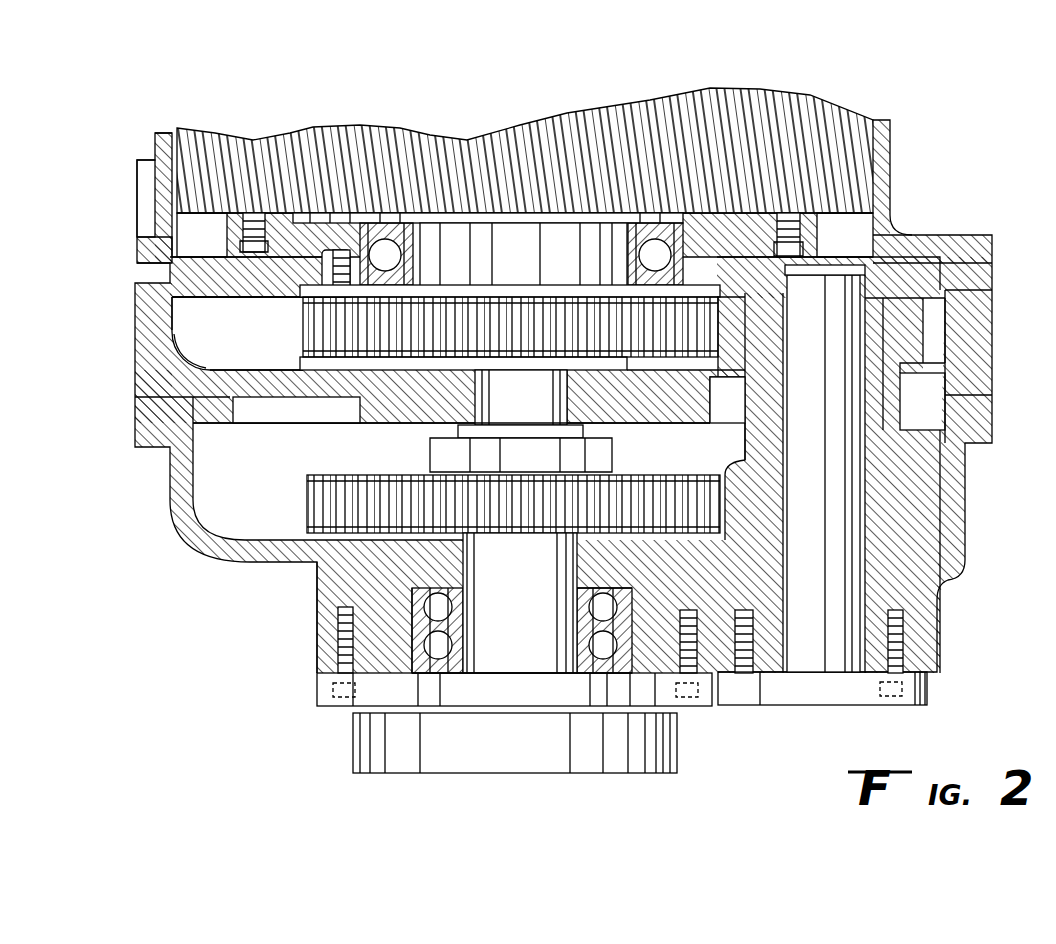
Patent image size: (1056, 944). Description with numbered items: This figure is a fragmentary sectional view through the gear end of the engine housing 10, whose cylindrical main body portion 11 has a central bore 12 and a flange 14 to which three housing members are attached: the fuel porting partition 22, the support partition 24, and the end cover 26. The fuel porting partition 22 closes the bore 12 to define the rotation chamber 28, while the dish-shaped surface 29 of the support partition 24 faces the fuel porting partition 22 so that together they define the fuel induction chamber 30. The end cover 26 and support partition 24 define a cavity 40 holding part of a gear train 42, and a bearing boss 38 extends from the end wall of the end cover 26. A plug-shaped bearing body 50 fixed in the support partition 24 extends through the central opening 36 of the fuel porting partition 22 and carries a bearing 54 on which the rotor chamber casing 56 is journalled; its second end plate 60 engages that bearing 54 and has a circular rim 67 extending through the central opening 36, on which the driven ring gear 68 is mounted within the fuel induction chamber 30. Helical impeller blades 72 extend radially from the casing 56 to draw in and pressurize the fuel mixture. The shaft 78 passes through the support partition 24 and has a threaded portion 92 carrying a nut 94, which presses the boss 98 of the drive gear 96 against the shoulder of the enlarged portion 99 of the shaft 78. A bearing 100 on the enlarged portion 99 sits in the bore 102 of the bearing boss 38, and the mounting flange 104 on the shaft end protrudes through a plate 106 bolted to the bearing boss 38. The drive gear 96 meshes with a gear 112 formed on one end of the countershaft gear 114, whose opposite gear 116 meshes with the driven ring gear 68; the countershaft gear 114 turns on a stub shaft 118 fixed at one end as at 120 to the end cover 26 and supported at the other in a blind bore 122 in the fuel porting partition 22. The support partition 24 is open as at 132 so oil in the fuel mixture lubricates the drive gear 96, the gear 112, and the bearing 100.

The engine housing 10 is at (172, 554).
The main body portion 11 is at (137, 185).
The central bore 12 is at (172, 140).
The flange 14 is at (137, 258).
The fuel porting partition 22 is at (236, 297).
The support partition 24 is at (222, 415).
The end cover 26 is at (265, 565).
The rotation chamber 28 is at (208, 241).
The dish-shaped surface 29 is at (205, 368).
The fuel induction chamber 30 is at (278, 346).
The central opening 36 is at (326, 258).
The bearing boss 38 is at (318, 618).
The cavity 40 is at (312, 457).
The gear train 42 is at (305, 491).
The bearing body 50 is at (440, 378).
The bearing 54 is at (408, 250).
The rotor chamber casing 56 is at (525, 164).
The second end plate 60 is at (812, 236).
The circular rim 67 is at (738, 239).
The driven ring gear 68 is at (668, 358).
The helical impeller blades 72 is at (340, 140).
The shaft 78 is at (520, 395).
The threaded portion 92 is at (585, 432).
The nut 94 is at (430, 455).
The drive gear 96 is at (474, 502).
The boss 98 is at (503, 570).
The enlarged portion 99 is at (522, 649).
The bearing 100 is at (458, 673).
The bore 102 is at (418, 650).
The mounting flange 104 is at (418, 773).
The plate 106 is at (317, 690).
The gear 112 is at (745, 450).
The countershaft gear 114 is at (742, 415).
The gear 116 is at (910, 305).
The stub shaft 118 is at (818, 690).
The fixed attachment 120 is at (905, 705).
The blind bore 122 is at (850, 268).
The opening 132 is at (922, 425).